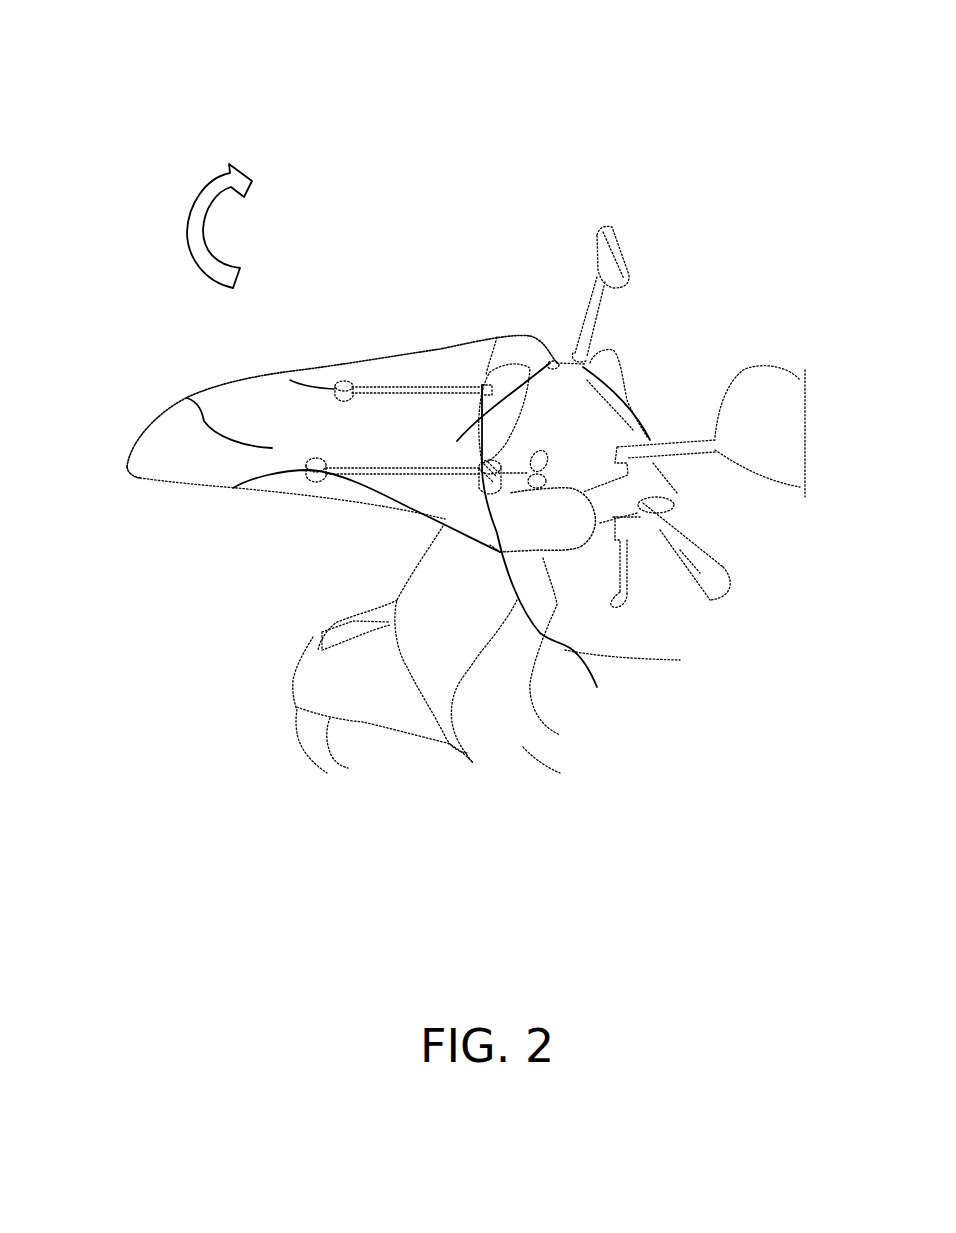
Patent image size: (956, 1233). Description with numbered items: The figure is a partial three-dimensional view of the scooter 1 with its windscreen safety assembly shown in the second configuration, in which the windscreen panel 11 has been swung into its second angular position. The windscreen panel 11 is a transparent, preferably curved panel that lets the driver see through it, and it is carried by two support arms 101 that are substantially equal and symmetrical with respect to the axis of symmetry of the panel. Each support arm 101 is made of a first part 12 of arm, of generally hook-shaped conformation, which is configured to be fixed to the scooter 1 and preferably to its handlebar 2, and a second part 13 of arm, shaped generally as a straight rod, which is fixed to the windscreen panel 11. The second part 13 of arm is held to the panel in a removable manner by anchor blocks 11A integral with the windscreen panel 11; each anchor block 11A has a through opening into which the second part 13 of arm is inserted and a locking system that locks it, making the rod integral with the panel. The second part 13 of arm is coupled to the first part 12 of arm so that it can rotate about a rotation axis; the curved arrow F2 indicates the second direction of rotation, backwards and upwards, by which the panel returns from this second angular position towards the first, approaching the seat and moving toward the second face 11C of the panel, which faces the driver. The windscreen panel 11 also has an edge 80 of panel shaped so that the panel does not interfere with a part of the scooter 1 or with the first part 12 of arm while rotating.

The scooter 1 is at (324, 88).
The handlebar 2 is at (641, 483).
The windscreen panel 11 is at (341, 362).
The anchor block 11A is at (290, 380).
The second face of the windscreen panel 11C is at (187, 398).
The first part of arm 12 is at (565, 548).
The second part of arm 13 is at (407, 386).
The edge of panel 80 is at (481, 470).
The support arm 101 is at (385, 377).
The second direction F2 is at (197, 202).